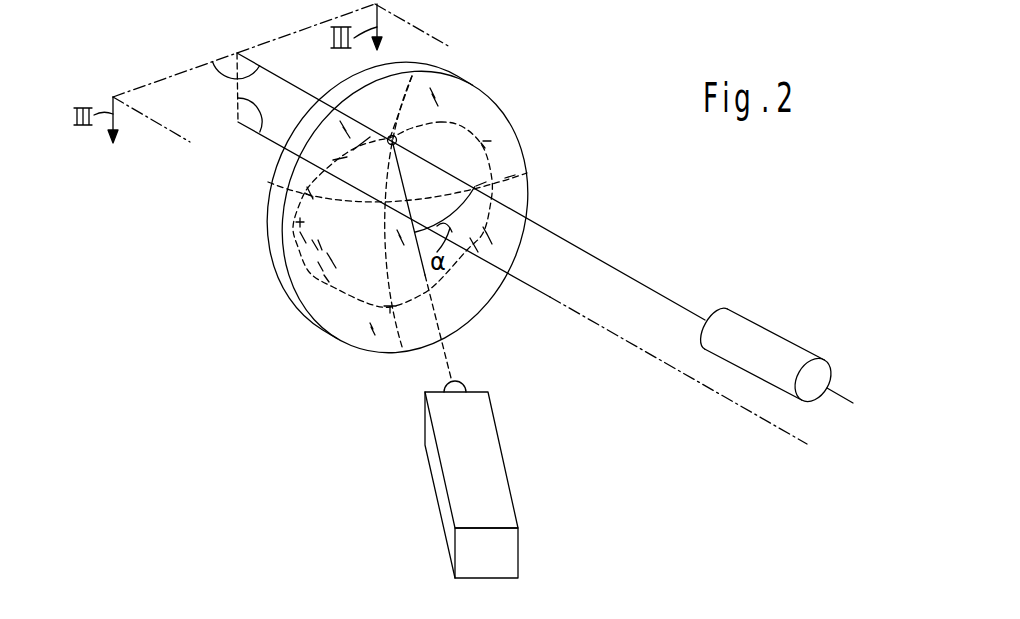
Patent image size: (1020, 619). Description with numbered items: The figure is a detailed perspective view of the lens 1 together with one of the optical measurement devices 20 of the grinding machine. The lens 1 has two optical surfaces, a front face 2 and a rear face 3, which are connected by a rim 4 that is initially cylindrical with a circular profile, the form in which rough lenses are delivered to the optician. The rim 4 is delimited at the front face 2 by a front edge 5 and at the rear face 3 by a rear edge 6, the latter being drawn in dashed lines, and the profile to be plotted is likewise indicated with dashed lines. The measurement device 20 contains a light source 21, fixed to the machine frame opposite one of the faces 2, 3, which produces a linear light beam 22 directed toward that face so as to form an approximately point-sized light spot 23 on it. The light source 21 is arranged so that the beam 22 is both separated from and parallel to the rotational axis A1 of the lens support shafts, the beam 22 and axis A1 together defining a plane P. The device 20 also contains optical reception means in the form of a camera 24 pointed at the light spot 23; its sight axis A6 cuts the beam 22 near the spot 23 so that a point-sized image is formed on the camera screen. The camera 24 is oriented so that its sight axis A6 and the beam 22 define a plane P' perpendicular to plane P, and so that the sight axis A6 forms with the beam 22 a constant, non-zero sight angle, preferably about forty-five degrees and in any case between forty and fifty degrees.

The lens 1 is at (272, 303).
The front face 2 is at (269, 148).
The rear face 3 is at (485, 103).
The rim 4 is at (273, 218).
The front edge 5 is at (268, 182).
The rear edge 6 is at (495, 147).
The optical measurement device 20 is at (685, 471).
The light source 21 is at (768, 334).
The light beam 22 is at (589, 252).
The light spot 23 is at (388, 137).
The camera 24 is at (500, 451).
The rotational axis A1 is at (778, 432).
The sight axis A6 is at (443, 330).
The plane P is at (240, 128).
The plane P' is at (236, 65).